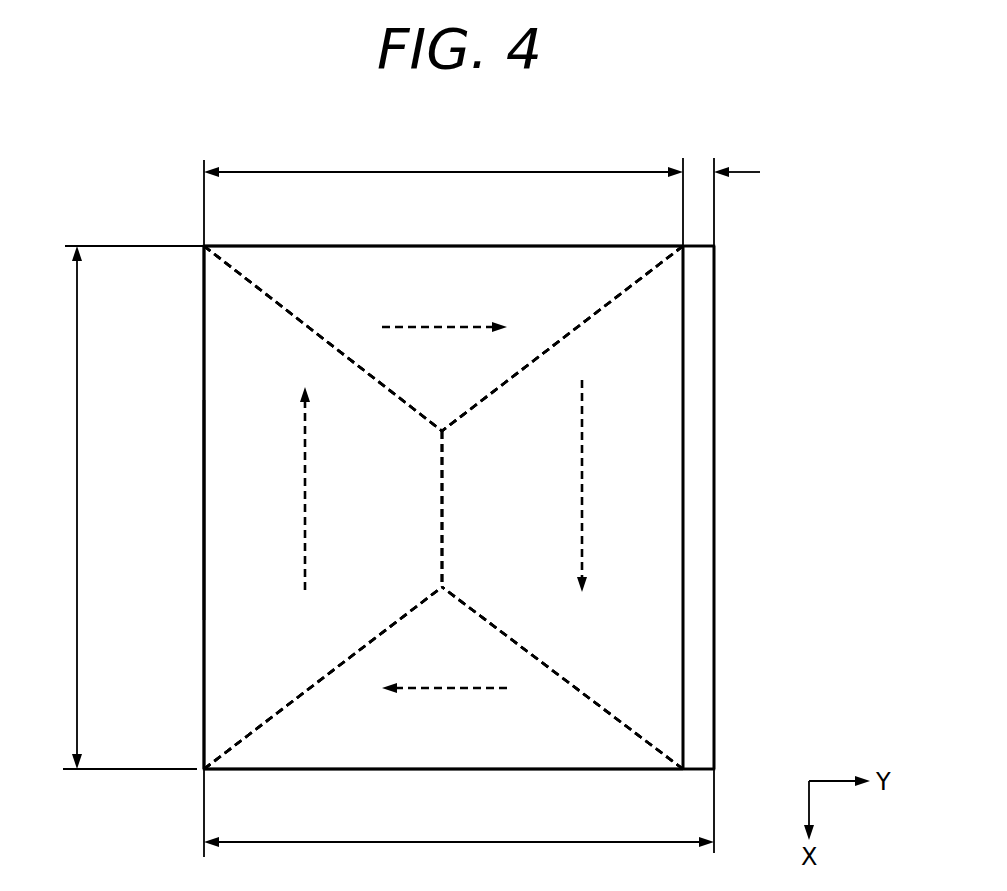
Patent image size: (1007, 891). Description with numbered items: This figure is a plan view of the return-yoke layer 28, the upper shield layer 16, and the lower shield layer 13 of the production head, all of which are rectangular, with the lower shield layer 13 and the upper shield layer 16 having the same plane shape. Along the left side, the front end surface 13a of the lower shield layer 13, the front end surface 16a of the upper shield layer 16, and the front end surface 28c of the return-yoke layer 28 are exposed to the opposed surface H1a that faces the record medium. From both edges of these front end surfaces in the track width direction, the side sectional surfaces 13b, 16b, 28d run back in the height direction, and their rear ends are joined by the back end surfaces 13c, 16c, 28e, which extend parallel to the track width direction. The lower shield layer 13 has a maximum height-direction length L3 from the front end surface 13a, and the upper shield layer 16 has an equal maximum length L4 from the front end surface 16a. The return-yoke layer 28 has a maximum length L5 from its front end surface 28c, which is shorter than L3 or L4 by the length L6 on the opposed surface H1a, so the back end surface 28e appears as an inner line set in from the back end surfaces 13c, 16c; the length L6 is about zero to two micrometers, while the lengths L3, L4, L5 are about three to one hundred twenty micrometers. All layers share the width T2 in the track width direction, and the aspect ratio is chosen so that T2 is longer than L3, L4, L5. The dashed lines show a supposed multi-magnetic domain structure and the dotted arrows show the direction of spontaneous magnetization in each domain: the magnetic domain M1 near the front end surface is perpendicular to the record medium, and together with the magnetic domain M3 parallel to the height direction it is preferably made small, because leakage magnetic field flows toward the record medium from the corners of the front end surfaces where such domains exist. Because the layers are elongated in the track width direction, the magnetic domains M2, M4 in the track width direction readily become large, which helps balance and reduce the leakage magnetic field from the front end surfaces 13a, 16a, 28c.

The lower shield layer 13 is at (527, 507).
The upper shield layer 16 is at (702, 585).
The front end surface of the lower shield layer 13a is at (143, 507).
The front end surface of the upper shield layer 16a is at (203, 640).
The side sectional surfaces of the lower shield layer 13b is at (459, 507).
The side sectional surfaces of the upper shield layer 16b is at (459, 507).
The back end surface of the lower shield layer 13c is at (792, 507).
The back end surface of the upper shield layer 16c is at (716, 455).
The return-yoke layer 28 is at (553, 258).
The front end surface of the return-yoke layer 28c is at (200, 347).
The side sectional surfaces of the return-yoke layer 28d is at (342, 245).
The back end surface of the return-yoke layer 28e is at (683, 535).
The opposed surface H1a is at (202, 507).
The magnetic domain M1 is at (315, 750).
The magnetic domain M2 is at (228, 680).
The magnetic domain M3 is at (465, 272).
The magnetic domain M4 is at (657, 640).
The maximum length of the return-yoke layer L5 is at (443, 194).
The length difference L6 is at (723, 187).
The maximum length in the track width direction T2 is at (115, 507).
The maximum length of the lower shield layer L3 is at (459, 823).
The maximum length of the upper shield layer L4 is at (459, 823).